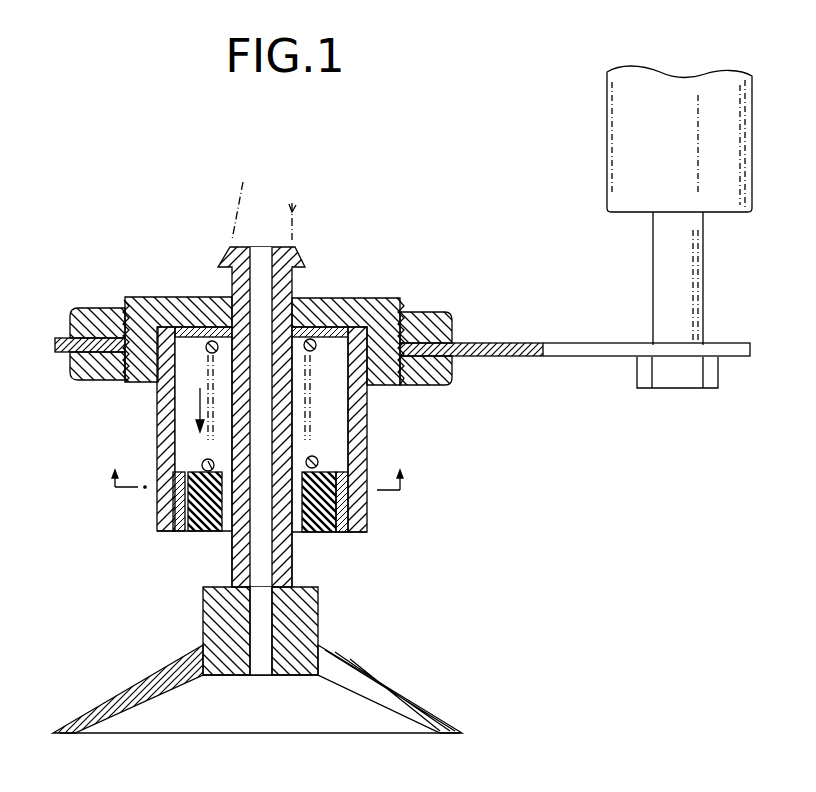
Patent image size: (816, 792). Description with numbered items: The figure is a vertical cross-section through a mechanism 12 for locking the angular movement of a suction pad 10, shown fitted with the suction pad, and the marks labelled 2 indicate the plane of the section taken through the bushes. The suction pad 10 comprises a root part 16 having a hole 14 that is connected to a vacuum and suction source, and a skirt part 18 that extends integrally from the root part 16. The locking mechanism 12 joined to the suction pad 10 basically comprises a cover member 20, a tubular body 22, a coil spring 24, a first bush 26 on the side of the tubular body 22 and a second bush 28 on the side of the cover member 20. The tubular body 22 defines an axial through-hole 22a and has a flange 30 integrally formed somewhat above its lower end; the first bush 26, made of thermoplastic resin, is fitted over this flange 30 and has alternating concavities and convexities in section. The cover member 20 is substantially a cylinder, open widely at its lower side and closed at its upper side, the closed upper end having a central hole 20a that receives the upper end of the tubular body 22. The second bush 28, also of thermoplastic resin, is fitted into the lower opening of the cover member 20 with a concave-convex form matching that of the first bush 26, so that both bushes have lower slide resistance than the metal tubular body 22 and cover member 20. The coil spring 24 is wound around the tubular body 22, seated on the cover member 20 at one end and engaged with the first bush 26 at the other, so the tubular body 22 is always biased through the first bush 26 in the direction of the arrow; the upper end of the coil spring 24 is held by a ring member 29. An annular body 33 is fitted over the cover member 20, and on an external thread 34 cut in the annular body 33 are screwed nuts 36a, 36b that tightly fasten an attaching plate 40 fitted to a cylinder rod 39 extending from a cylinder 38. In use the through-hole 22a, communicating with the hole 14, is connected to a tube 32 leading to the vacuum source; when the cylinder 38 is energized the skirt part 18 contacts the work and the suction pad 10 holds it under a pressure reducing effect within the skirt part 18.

The section line 2 is at (491, 223).
The suction pad 10 is at (257, 660).
The mechanism for locking the angular movement of a suction pad 12 is at (418, 441).
The hole 14 is at (263, 620).
The root part 16 is at (310, 622).
The skirt part 18 is at (412, 707).
The cover member 20 is at (158, 508).
The hole 20a is at (292, 282).
The tubular body 22 is at (285, 416).
The through-hole 22a is at (232, 563).
The coil spring 24 is at (200, 297).
The first bush 26 is at (330, 500).
The second bush 28 is at (343, 533).
The ring member 29 is at (188, 297).
The flange 30 is at (297, 533).
The tube 32 is at (296, 205).
The annular body 33 is at (390, 298).
The external thread 34 is at (410, 300).
The nut 36a is at (99, 315).
The nut 36b is at (98, 375).
The cylinder 38 is at (630, 137).
The cylinder rod 39 is at (673, 277).
The attaching plate 40 is at (58, 338).